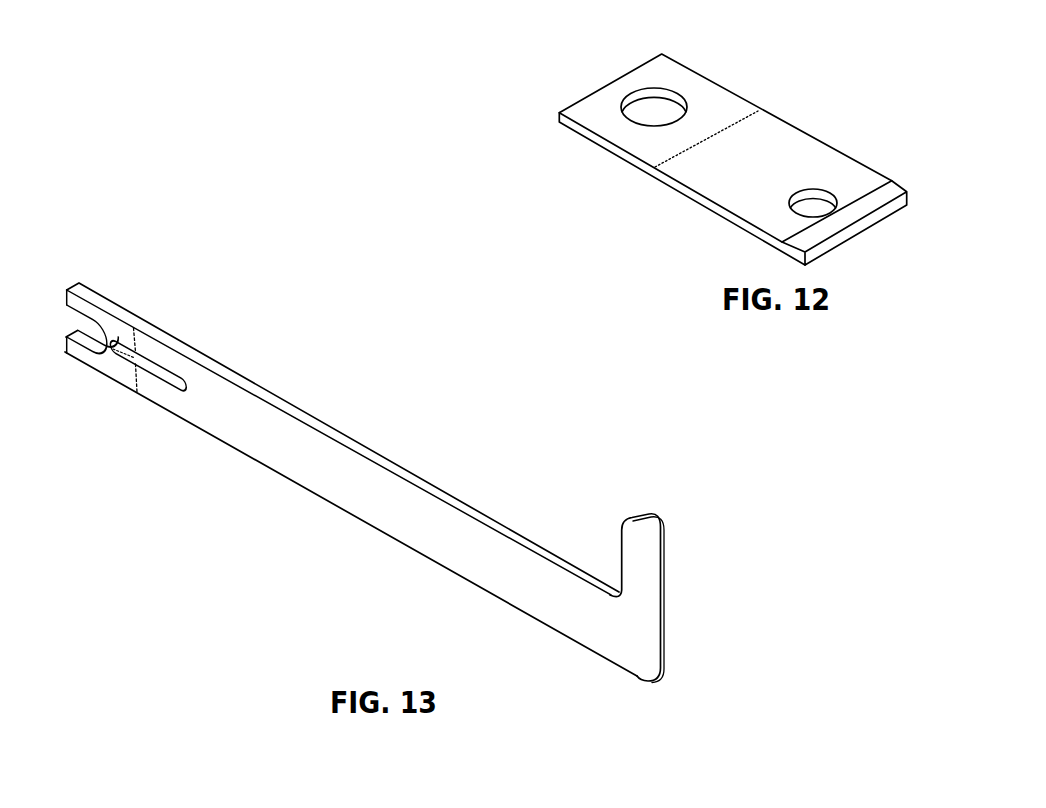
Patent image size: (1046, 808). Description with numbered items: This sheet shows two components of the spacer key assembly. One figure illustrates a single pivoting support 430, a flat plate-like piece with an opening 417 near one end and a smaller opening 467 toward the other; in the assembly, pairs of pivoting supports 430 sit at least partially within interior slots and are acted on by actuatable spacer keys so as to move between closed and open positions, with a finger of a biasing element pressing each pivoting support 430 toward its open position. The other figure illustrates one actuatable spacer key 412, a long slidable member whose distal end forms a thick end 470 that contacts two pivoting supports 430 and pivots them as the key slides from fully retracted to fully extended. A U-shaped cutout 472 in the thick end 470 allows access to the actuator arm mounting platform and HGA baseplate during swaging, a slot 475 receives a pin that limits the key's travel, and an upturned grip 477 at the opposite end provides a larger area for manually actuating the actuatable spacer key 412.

In FIG. 12, the pivoting support 430 is at (702, 159).
In FIG. 12, the aperture 417 is at (658, 113).
In FIG. 12, the finger 467 is at (810, 198).
In FIG. 13, the actuatable spacer key 412 is at (411, 465).
In FIG. 13, the thick end 470 is at (120, 312).
In FIG. 13, the slot 472 is at (87, 332).
In FIG. 13, the slot 475 is at (148, 365).
In FIG. 13, the grip 477 is at (647, 537).